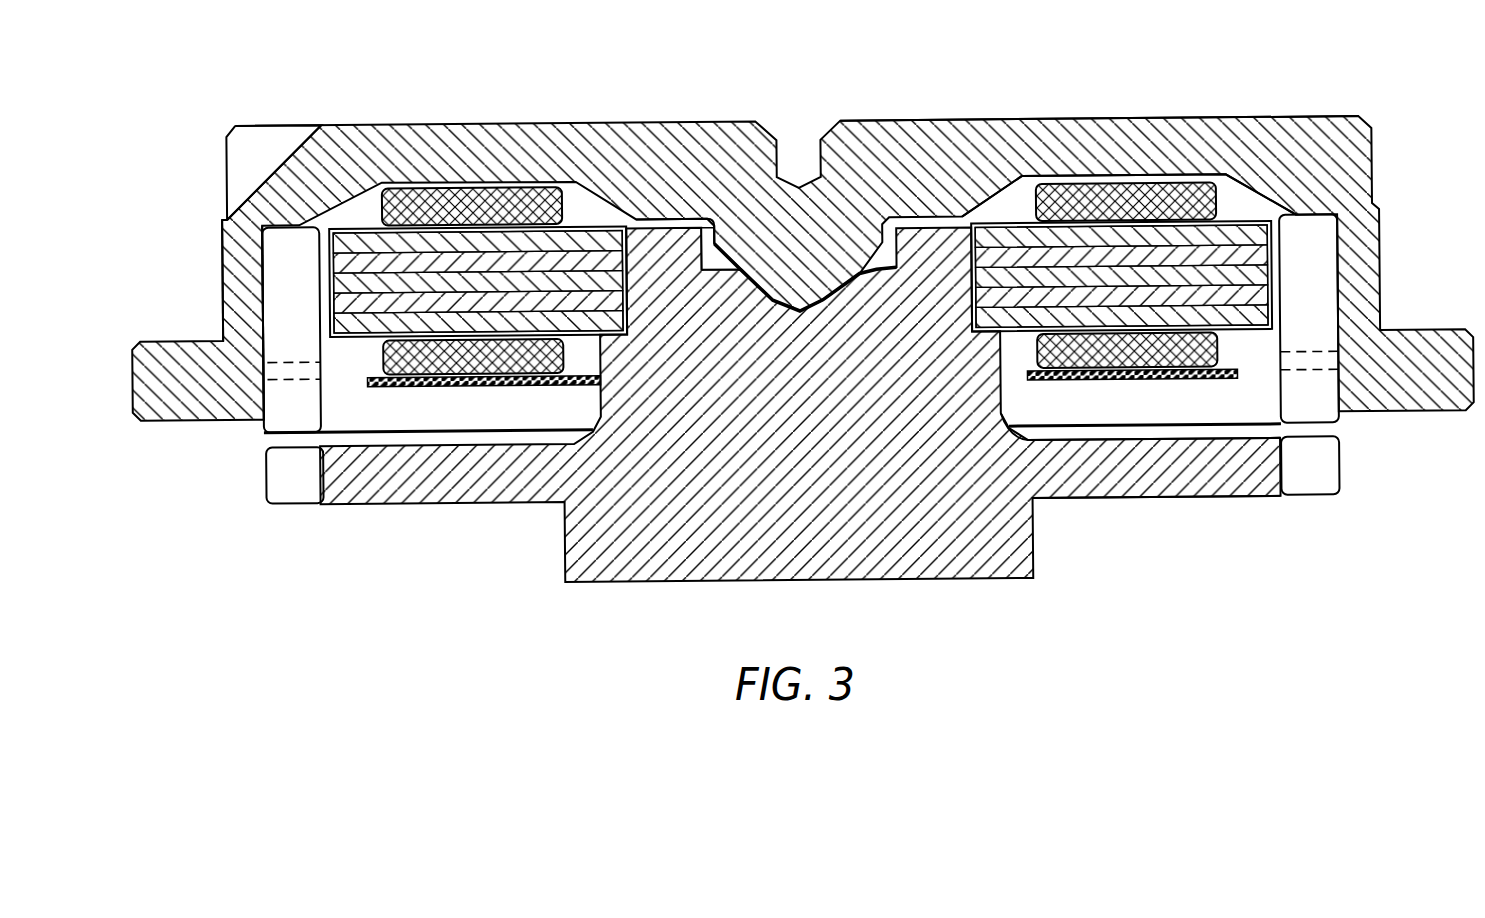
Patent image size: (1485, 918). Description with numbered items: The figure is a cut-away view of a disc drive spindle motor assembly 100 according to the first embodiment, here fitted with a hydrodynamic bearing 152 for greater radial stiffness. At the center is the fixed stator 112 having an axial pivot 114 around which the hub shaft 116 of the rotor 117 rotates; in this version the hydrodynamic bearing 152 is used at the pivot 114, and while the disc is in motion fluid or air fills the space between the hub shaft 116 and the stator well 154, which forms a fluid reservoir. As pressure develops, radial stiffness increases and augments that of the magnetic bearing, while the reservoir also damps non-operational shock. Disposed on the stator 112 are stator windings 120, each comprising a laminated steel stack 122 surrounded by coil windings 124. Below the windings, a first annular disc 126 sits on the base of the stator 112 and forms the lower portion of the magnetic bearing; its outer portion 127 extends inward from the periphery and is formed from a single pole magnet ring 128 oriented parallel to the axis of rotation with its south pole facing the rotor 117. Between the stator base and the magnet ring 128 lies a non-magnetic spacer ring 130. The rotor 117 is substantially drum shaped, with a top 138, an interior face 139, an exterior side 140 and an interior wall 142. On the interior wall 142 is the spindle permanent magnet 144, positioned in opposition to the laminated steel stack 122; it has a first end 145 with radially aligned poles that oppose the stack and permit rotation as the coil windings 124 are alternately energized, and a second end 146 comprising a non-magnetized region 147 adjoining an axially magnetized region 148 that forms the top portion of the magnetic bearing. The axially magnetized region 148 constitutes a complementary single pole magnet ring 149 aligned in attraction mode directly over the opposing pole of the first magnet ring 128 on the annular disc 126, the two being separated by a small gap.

The spindle motor assembly 100 is at (802, 340).
The stator 112 is at (973, 514).
The axial pivot 114 is at (821, 438).
The hub shaft 116 is at (773, 257).
The rotor 117 is at (305, 161).
The stator windings 120 is at (1189, 192).
The laminated steel stack 122 is at (1227, 243).
The coil windings 124 is at (1147, 139).
The first annular disc 126 is at (1170, 526).
The outer portion 127 is at (1338, 453).
The single pole magnet ring 128 is at (1313, 471).
The non-magnetic spacer ring 130 is at (1141, 487).
The top 138 is at (1099, 81).
The interior face 139 is at (1050, 142).
The exterior side 140 is at (227, 215).
The interior wall 142 is at (282, 282).
The spindle permanent magnet 144 is at (230, 235).
The first end 145 is at (230, 168).
The second end 146 is at (287, 430).
The non-magnetized region 147 is at (293, 369).
The axially magnetized region 148 is at (283, 415).
The complementary single pole magnet ring 149 is at (287, 402).
The hydrodynamic bearing 152 is at (740, 280).
The stator well 154 is at (693, 219).